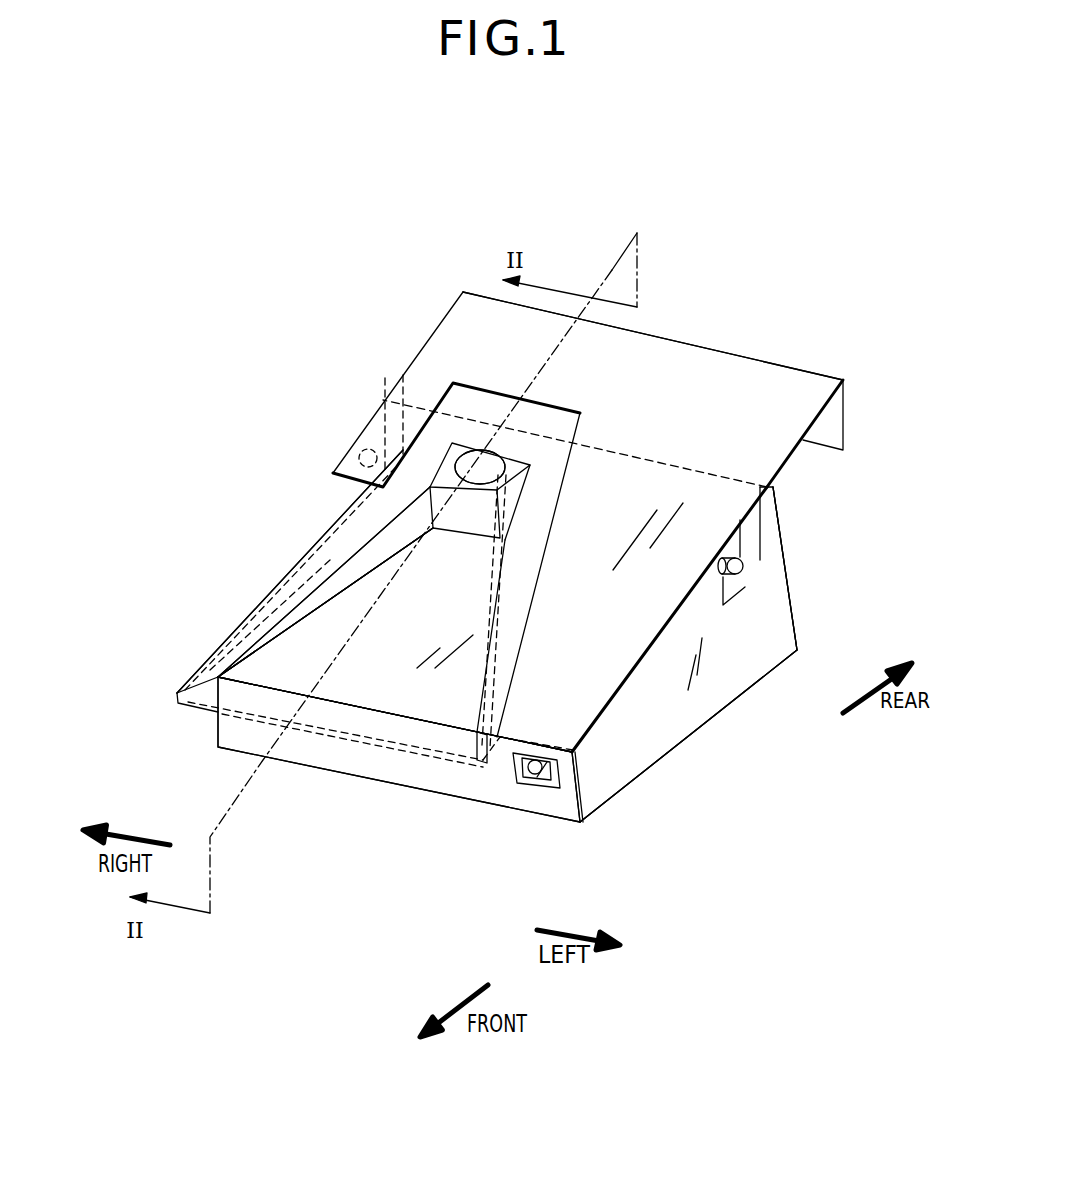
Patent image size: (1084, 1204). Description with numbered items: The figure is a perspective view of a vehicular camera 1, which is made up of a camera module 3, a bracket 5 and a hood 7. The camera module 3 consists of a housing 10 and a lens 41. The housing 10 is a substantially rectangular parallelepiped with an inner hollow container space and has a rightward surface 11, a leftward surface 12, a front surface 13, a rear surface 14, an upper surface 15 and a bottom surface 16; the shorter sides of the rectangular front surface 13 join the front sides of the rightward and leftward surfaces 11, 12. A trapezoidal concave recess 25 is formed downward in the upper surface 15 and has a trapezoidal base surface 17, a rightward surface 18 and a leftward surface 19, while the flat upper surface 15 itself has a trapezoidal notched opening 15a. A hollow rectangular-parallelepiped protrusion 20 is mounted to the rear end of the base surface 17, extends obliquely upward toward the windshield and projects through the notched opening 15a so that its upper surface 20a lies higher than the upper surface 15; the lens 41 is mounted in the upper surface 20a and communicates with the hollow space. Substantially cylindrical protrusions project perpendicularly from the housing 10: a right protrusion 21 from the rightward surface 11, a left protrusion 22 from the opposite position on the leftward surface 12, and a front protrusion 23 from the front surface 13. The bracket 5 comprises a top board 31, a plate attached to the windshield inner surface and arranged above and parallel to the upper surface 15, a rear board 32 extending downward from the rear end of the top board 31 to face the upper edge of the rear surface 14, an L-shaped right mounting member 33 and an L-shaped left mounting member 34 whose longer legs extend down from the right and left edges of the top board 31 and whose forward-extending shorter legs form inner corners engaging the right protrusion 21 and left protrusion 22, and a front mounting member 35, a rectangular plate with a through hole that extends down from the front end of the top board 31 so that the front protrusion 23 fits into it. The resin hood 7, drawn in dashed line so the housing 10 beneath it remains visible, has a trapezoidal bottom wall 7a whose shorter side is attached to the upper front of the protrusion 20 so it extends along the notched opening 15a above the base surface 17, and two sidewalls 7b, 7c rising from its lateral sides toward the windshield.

The vehicular camera 1 is at (683, 202).
The camera module 3 is at (730, 693).
The bracket 5 is at (720, 355).
The hood 7 is at (236, 620).
The bottom wall 7a is at (190, 703).
The sidewall 7b is at (364, 522).
The sidewall 7c is at (513, 542).
The housing 10 is at (485, 720).
The rightward surface 11 is at (490, 612).
The leftward surface 12 is at (670, 725).
The front surface 13 is at (392, 770).
The rear surface 14 is at (783, 542).
The upper surface 15 is at (352, 538).
The trapezoidal notched opening 15a is at (337, 580).
The bottom surface 16 is at (620, 795).
The base surface 17 is at (380, 593).
The rightward surface 18 is at (307, 610).
The leftward surface 19 is at (488, 668).
The protrusion 20 is at (435, 487).
The upper surface 20a is at (517, 470).
The right protrusion 21 is at (357, 457).
The left protrusion 22 is at (743, 570).
The front protrusion 23 is at (533, 790).
The trapezoidal concave recess 25 is at (420, 634).
The top board 31 is at (638, 353).
The rear board 32 is at (840, 427).
The right mounting member 33 is at (370, 420).
The left mounting member 34 is at (752, 553).
The front mounting member 35 is at (503, 780).
The lens 41 is at (463, 460).